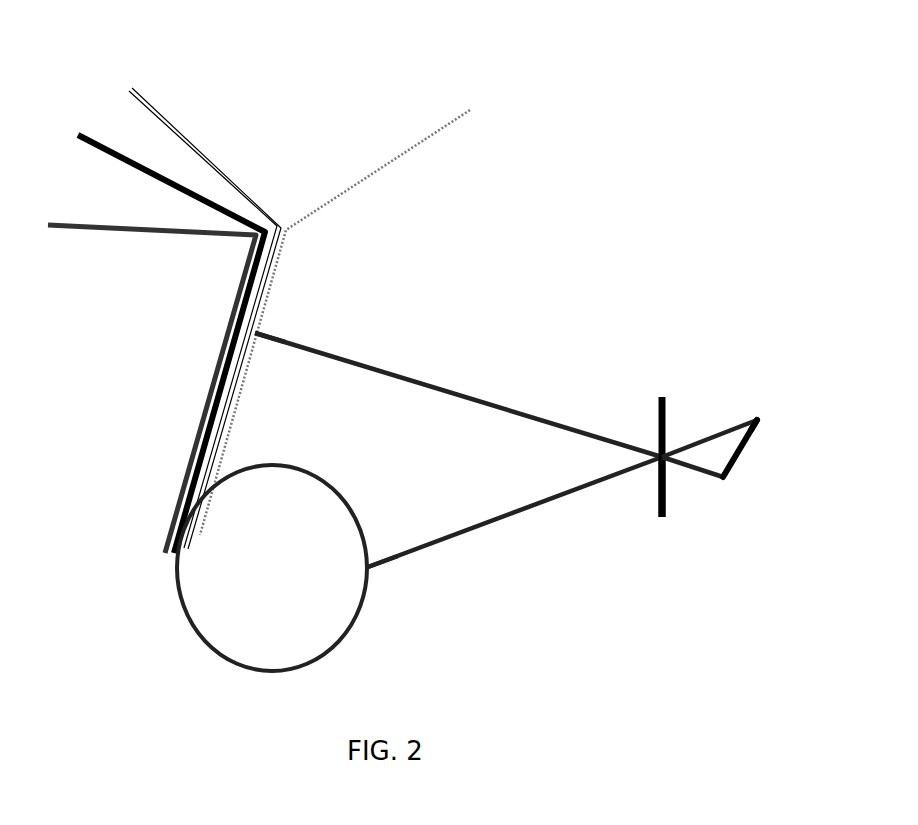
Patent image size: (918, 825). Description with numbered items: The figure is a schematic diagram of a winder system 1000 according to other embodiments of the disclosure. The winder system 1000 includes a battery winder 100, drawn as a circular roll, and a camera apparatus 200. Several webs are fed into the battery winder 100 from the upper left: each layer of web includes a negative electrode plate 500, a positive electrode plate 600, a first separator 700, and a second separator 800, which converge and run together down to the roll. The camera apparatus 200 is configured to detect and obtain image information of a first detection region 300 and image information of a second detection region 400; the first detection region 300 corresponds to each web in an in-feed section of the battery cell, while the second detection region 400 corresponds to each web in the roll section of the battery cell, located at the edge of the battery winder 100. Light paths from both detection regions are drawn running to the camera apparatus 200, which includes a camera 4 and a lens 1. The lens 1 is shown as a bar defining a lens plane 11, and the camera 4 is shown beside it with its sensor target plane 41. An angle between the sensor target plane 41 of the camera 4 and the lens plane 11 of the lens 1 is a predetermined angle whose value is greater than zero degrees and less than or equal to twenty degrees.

The winder system 1000 is at (618, 41).
The battery winder 100 is at (272, 588).
The camera apparatus 200 is at (714, 497).
The lens 1 is at (662, 445).
The lens plane 11 is at (666, 506).
The camera 4 is at (748, 450).
The sensor target plane 41 is at (764, 414).
The first detection region 300 is at (282, 327).
The second detection region 400 is at (395, 580).
The negative electrode plate 500 is at (158, 332).
The positive electrode plate 600 is at (350, 311).
The first separator 700 is at (205, 312).
The second separator 800 is at (149, 375).